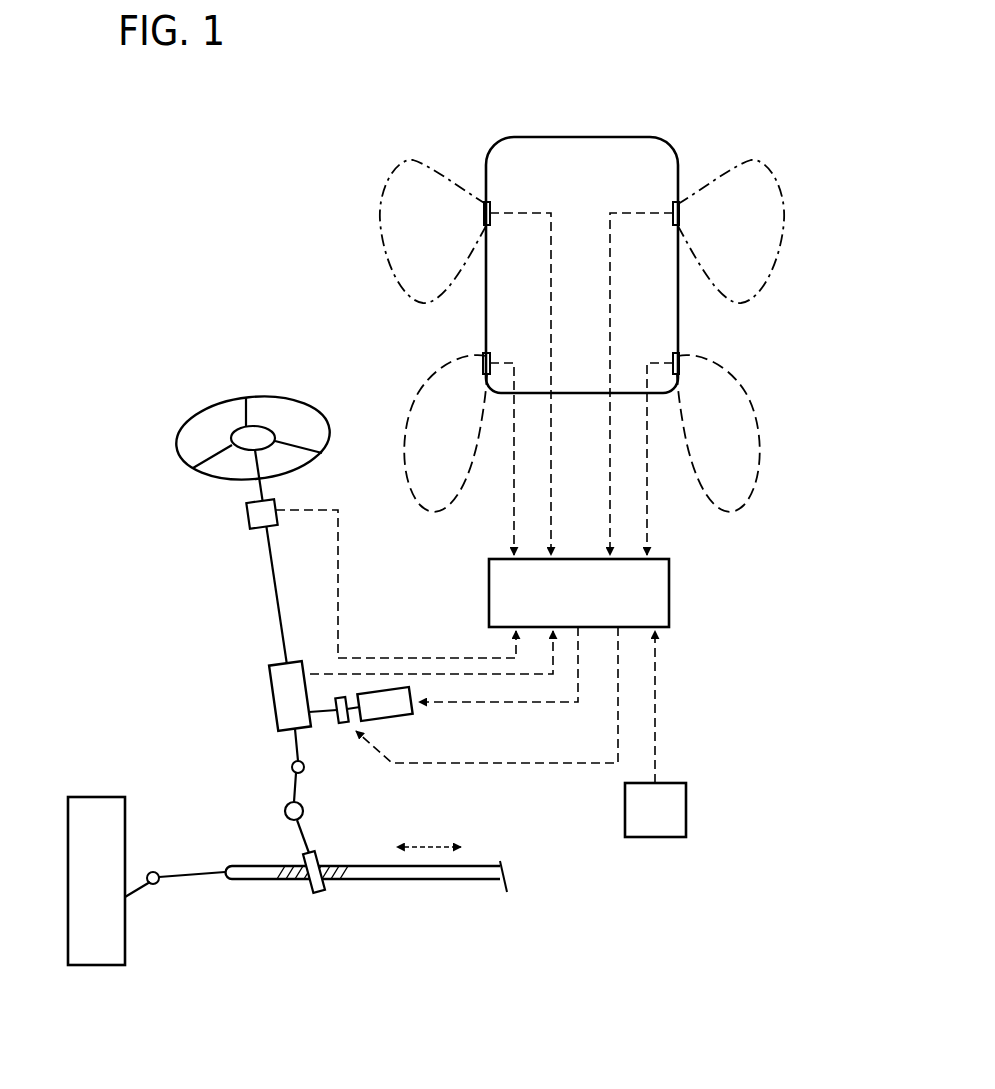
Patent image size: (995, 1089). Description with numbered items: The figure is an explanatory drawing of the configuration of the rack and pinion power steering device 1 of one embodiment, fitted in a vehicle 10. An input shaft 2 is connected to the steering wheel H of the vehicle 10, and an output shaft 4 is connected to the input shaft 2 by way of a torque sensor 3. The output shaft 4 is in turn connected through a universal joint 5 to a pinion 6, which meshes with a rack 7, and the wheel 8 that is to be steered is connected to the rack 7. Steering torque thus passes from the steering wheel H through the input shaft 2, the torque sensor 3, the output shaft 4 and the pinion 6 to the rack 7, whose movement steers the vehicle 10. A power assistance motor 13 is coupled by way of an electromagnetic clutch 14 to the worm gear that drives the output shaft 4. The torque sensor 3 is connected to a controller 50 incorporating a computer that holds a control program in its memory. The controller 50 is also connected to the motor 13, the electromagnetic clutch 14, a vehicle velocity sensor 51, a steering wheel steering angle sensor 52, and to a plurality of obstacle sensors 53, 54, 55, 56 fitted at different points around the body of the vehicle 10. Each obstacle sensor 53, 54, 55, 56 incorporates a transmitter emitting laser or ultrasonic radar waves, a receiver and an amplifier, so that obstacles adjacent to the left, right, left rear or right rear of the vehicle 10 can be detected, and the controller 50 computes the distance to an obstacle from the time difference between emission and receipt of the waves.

The rack and pinion power steering device 1 is at (220, 400).
The steering wheel H is at (176, 450).
The input shaft 2 is at (277, 611).
The torque sensor 3 is at (280, 697).
The output shaft 4 is at (295, 743).
The universal joint 5 is at (286, 807).
The pinion 6 is at (310, 888).
The rack 7 is at (282, 877).
The wheel 8 is at (117, 797).
The vehicle 10 is at (555, 137).
The power assistance motor 13 is at (387, 710).
The electromagnetic clutch 14 is at (345, 723).
The controller 50 is at (650, 590).
The vehicle velocity sensor 51 is at (652, 818).
The steering wheel steering angle sensor 52 is at (258, 516).
The obstacle sensor 53 is at (484, 205).
The obstacle sensor 54 is at (679, 205).
The obstacle sensor 55 is at (485, 355).
The obstacle sensor 56 is at (679, 355).